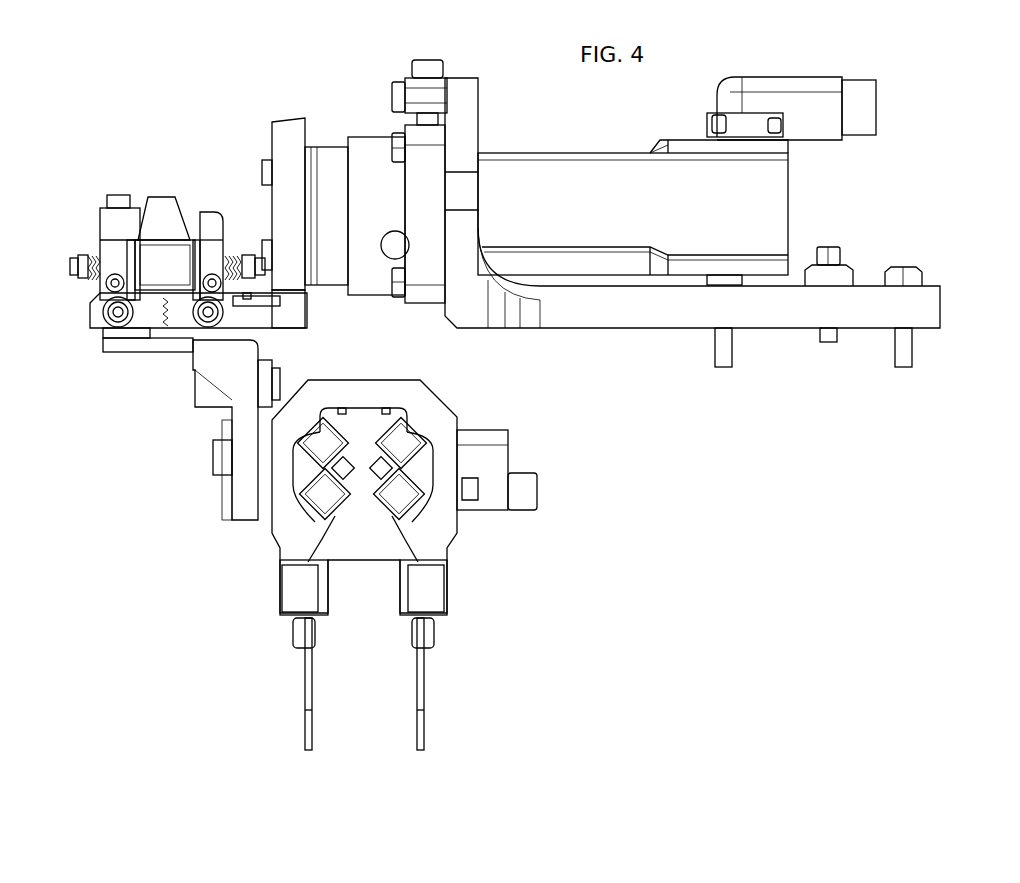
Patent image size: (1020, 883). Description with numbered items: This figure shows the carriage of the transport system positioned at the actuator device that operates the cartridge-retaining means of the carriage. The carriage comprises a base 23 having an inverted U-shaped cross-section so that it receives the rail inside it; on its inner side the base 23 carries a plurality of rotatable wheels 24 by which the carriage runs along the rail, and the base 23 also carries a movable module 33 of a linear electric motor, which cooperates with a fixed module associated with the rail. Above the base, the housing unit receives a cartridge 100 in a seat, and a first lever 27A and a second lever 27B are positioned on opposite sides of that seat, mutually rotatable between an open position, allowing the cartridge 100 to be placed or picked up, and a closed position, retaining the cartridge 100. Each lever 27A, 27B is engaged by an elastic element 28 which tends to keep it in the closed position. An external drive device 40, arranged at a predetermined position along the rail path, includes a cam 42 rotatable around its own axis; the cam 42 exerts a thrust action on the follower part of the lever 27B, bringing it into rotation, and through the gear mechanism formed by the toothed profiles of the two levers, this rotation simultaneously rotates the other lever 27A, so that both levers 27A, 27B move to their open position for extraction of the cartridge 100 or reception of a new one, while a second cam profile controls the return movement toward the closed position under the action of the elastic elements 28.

The base 23 is at (455, 538).
The rotatable wheels 24 is at (388, 510).
The first lever 27A is at (100, 246).
The second lever 27B is at (207, 220).
The elastic element 28 is at (232, 258).
The movable module 33 is at (435, 592).
The external drive device 40 is at (651, 340).
The cam 42 is at (290, 120).
The cartridge 100 is at (163, 205).